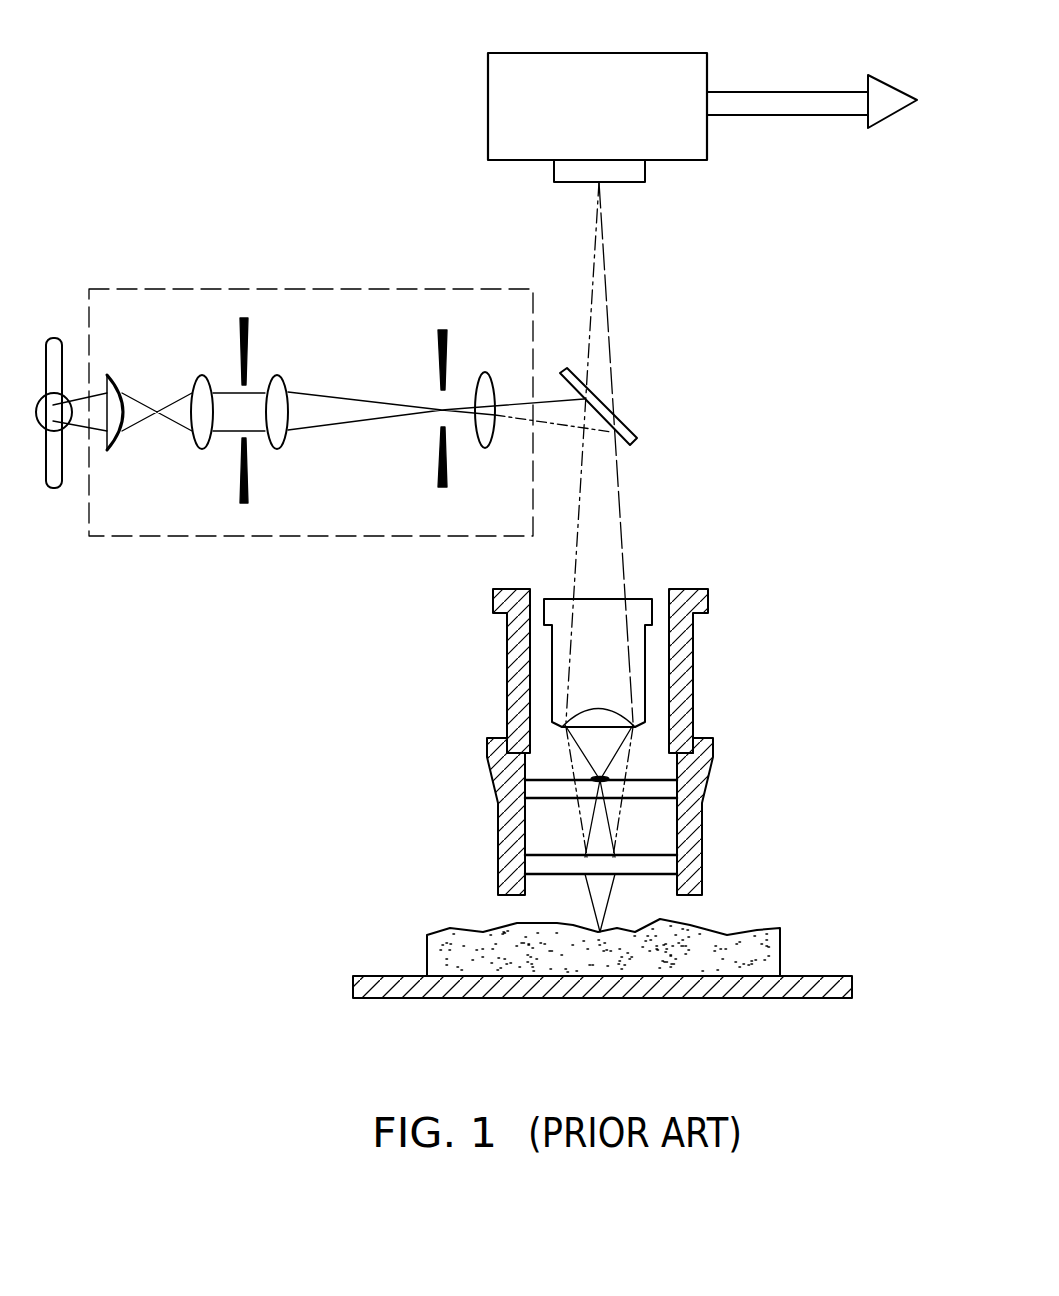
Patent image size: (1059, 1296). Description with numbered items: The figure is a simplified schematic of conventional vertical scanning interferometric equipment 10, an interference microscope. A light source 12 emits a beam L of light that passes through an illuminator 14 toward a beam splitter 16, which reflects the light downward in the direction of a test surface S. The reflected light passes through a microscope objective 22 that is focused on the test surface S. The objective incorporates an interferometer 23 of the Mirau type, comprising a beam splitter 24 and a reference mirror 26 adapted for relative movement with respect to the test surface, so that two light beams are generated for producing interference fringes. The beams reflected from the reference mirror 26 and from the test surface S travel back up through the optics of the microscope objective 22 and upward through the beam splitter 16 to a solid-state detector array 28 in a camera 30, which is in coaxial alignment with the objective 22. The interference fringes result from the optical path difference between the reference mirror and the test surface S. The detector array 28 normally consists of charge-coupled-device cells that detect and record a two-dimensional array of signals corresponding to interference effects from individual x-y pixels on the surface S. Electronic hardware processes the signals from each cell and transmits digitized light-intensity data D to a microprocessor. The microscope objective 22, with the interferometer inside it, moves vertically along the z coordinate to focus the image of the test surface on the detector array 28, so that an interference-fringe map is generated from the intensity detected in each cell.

The vertical scanning interferometric equipment 10 is at (797, 434).
The light source 12 is at (53, 338).
The illuminator 14 is at (297, 289).
The beam splitter 16 is at (637, 430).
The microscope objective 22 is at (695, 633).
The interferometer 23 is at (494, 848).
The beam splitter 24 is at (650, 850).
The reference mirror 26 is at (600, 776).
The solid-state detector array 28 is at (638, 174).
The camera 30 is at (699, 58).
The digitized light-intensity data D is at (832, 97).
The beam of light L is at (88, 425).
The test surface S is at (777, 942).